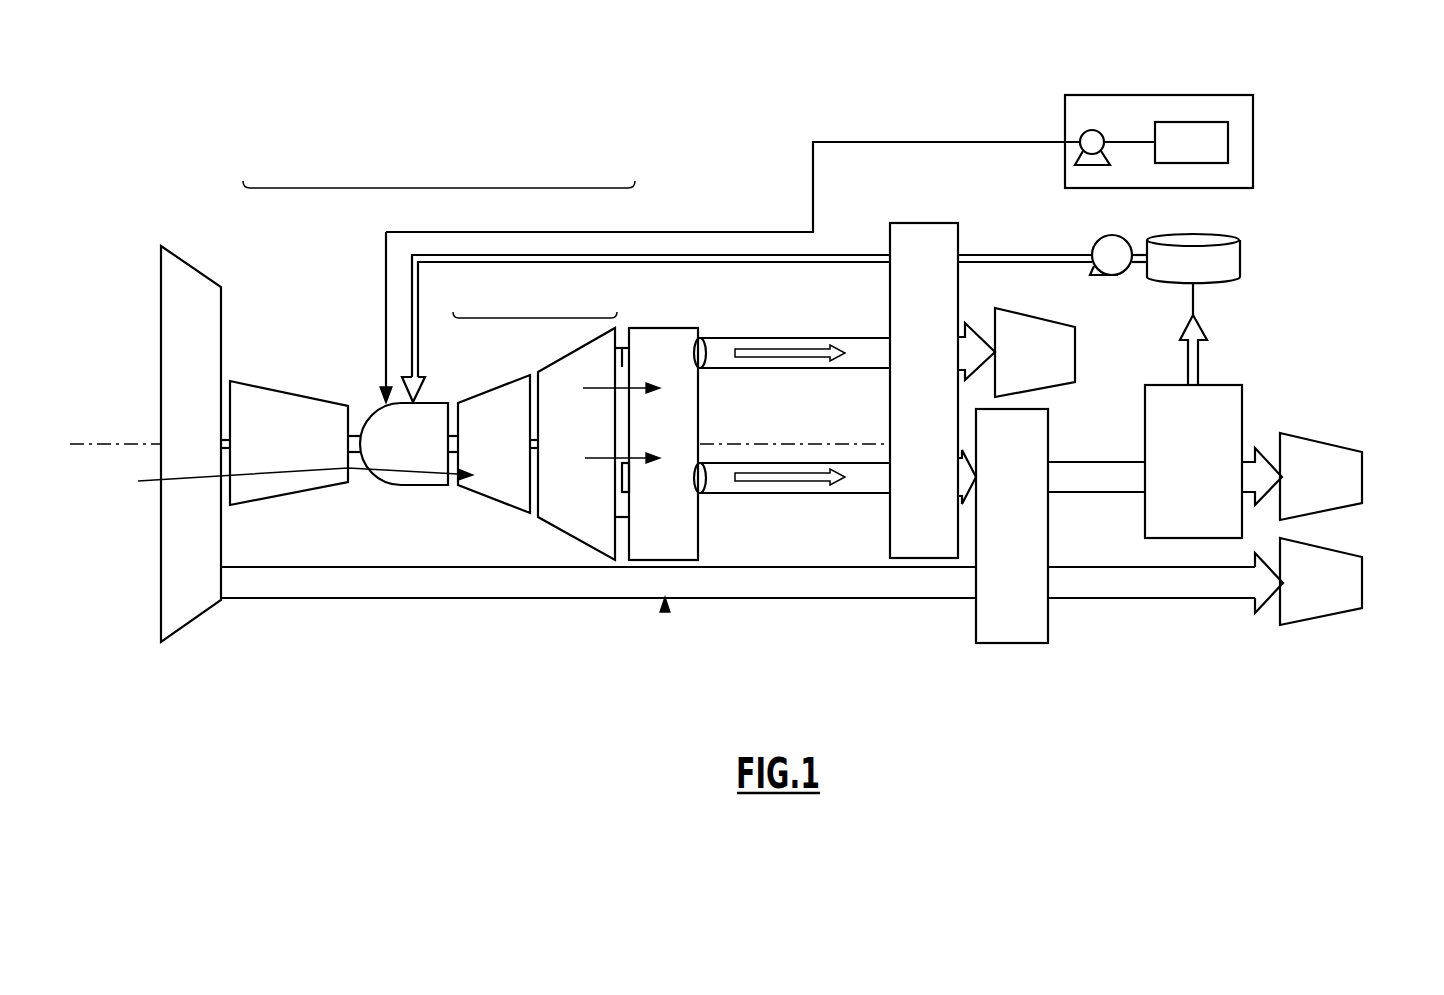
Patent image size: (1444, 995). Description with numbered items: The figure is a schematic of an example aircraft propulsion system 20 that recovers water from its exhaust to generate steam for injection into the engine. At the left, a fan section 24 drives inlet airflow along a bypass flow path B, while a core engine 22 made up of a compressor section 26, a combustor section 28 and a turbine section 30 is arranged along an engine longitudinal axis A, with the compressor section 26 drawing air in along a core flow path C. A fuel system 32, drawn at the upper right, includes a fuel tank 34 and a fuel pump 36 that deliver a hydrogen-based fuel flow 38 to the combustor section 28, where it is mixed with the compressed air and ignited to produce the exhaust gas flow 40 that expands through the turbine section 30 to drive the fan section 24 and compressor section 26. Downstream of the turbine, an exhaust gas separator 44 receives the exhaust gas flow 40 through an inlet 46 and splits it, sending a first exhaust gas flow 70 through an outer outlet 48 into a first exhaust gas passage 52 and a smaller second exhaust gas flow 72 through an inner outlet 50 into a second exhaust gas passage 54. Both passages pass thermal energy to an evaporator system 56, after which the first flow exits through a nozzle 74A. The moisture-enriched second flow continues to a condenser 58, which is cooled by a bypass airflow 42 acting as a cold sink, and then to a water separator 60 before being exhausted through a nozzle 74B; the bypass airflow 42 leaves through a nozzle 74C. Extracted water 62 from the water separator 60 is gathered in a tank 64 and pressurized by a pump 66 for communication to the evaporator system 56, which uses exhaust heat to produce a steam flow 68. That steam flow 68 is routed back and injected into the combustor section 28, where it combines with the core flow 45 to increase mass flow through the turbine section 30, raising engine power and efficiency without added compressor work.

The propulsion system 20 is at (756, 343).
The core engine 22 is at (438, 188).
The fan section 24 is at (188, 607).
The compressor section 26 is at (257, 383).
The combustor section 28 is at (378, 404).
The turbine section 30 is at (532, 318).
The fuel system 32 is at (1254, 118).
The fuel tank 34 is at (1229, 147).
The fuel pump 36 is at (1082, 148).
The fuel flow 38 is at (885, 142).
The exhaust gas flow 40 is at (634, 390).
The bypass airflow 42 is at (665, 611).
The exhaust gas separator 44 is at (672, 340).
The core flow 45 is at (363, 470).
The inlet 46 is at (622, 348).
The outer outlet 48 is at (707, 362).
The inner outlet 50 is at (707, 490).
The first exhaust gas passage 52 is at (768, 338).
The second exhaust gas passage 54 is at (815, 493).
The evaporator system 56 is at (898, 538).
The condenser 58 is at (1011, 633).
The water separator 60 is at (1147, 510).
The water 62 is at (1200, 357).
The tank 64 is at (1241, 260).
The pump 66 is at (1098, 246).
The steam flow 68 is at (838, 255).
The first exhaust gas flow 70 is at (795, 358).
The second exhaust gas flow 72 is at (793, 484).
The nozzle 74A is at (1076, 348).
The nozzle 74B is at (1363, 470).
The nozzle 74C is at (1363, 572).
The engine longitudinal axis A is at (112, 444).
The bypass flow path B is at (460, 588).
The core flow path C is at (280, 481).